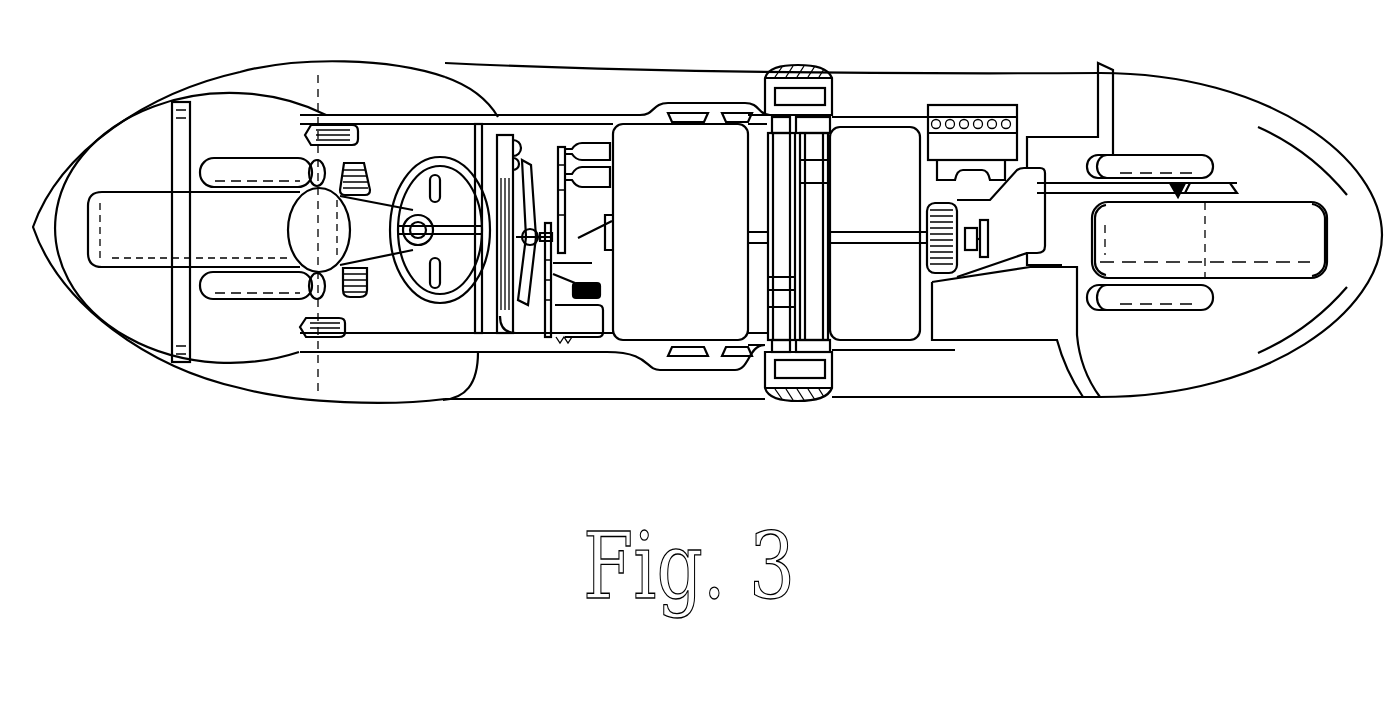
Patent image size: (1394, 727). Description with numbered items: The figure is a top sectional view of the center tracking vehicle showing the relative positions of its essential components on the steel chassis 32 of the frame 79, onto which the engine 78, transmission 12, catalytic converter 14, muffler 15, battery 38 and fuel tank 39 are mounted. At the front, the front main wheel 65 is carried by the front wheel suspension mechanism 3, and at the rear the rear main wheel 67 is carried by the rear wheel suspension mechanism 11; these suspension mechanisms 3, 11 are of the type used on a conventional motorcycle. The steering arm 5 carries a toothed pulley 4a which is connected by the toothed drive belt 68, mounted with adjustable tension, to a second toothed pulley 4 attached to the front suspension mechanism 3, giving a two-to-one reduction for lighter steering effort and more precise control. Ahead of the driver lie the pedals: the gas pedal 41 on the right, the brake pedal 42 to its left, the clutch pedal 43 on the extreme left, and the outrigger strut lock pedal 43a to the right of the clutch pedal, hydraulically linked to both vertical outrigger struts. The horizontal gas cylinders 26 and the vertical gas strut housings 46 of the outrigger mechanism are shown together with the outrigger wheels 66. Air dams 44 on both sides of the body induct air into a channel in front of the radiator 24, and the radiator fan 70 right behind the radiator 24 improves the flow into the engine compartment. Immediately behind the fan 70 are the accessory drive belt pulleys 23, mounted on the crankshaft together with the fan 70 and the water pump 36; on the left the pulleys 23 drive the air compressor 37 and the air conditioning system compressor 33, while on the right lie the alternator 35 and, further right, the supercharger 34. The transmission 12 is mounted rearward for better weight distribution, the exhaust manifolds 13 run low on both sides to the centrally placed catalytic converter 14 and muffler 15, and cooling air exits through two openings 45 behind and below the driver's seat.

The front wheel suspension mechanism 3 is at (226, 167).
The toothed pulley 4 is at (317, 225).
The toothed pulley 4a is at (420, 213).
The steering arm 5 is at (405, 285).
The rear wheel suspension mechanism 11 is at (1195, 298).
The transmission 12 is at (1000, 240).
The exhaust manifolds 13 is at (683, 108).
The catalytic converter 14 is at (962, 182).
The muffler 15 is at (1060, 147).
The accessory drive belt pulleys 23 is at (549, 307).
The radiator 24 is at (505, 173).
The horizontal gas cylinders 26 is at (836, 196).
The steel chassis 32 is at (138, 345).
The air conditioning system compressor 33 is at (565, 325).
The supercharger 34 is at (600, 152).
The alternator 35 is at (600, 178).
The water pump 36 is at (580, 237).
The air compressor 37 is at (582, 280).
The battery 38 is at (977, 127).
The fuel tank 39 is at (978, 330).
The gas pedal 41 is at (330, 125).
The brake pedal 42 is at (358, 168).
The clutch pedal 43 is at (312, 334).
The outrigger strut lock pedal 43a is at (355, 297).
The air dams 44 is at (463, 400).
The openings 45 is at (738, 388).
The vertical gas strut housings 46 is at (810, 401).
The front main wheel 65 is at (125, 213).
The outrigger wheels 66 is at (792, 95).
The rear main wheel 67 is at (1248, 258).
The toothed drive belt 68 is at (377, 197).
The radiator fan 70 is at (531, 210).
The engine 78 is at (677, 318).
The steel beam frame 79 is at (447, 108).